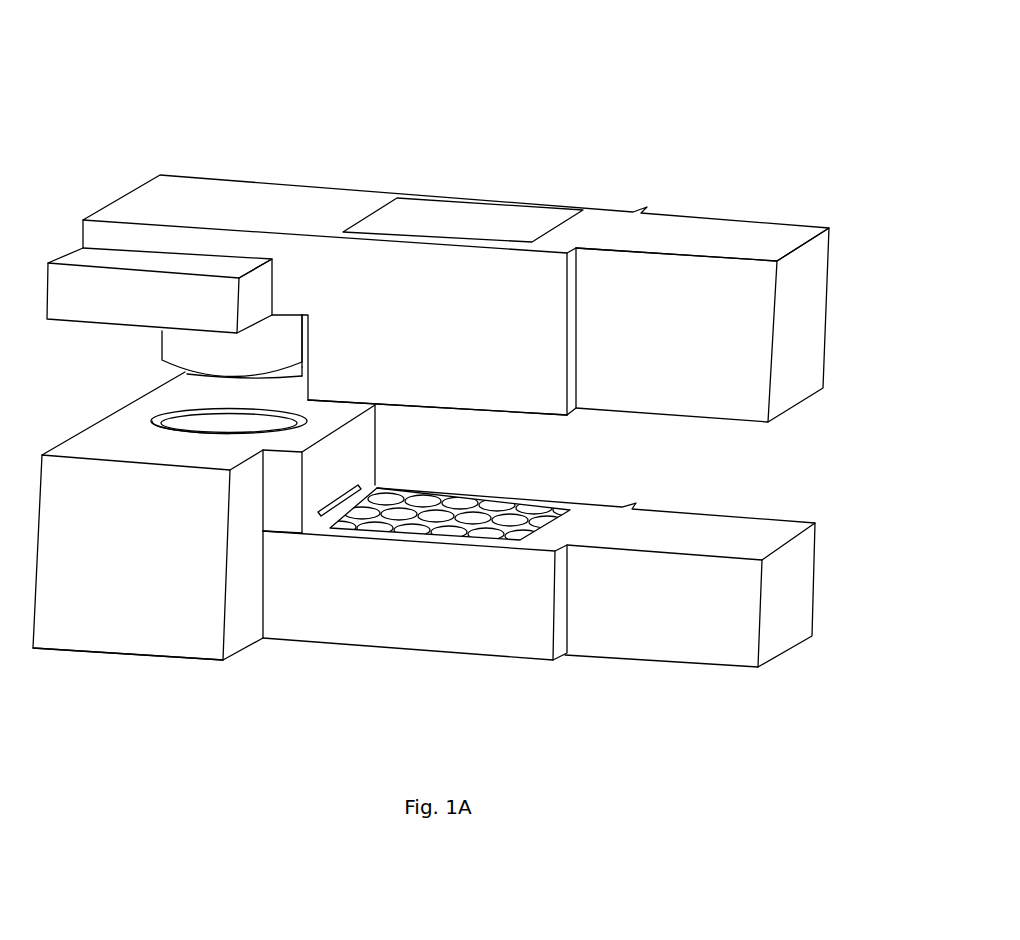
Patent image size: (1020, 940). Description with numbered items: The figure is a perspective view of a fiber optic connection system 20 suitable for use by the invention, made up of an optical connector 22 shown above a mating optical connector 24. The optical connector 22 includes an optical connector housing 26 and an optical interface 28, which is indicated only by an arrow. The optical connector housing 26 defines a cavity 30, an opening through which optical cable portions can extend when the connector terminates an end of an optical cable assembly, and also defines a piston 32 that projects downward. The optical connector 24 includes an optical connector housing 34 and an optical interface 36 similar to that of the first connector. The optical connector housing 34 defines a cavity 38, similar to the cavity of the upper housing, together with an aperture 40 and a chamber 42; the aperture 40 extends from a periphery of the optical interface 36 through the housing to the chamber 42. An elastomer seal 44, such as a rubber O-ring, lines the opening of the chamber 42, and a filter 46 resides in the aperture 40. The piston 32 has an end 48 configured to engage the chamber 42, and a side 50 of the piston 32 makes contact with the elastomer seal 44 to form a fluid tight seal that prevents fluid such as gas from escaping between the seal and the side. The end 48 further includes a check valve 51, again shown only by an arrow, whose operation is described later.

The fiber optic connection system 20 is at (870, 85).
The optical connector 22 is at (684, 185).
The optical connector 24 is at (748, 698).
The optical connector housing 26 is at (812, 328).
The optical interface 28 is at (512, 428).
The cavity 30 is at (467, 233).
The piston 32 is at (222, 363).
The optical connector housing 34 is at (802, 590).
The optical interface 36 is at (512, 493).
The cavity 38 is at (482, 676).
The aperture 40 is at (352, 492).
The chamber 42 is at (188, 422).
The elastomer seal 44 is at (157, 424).
The filter 46 is at (318, 518).
The end 48 is at (187, 374).
The side 50 is at (165, 340).
The check valve 51 is at (258, 388).